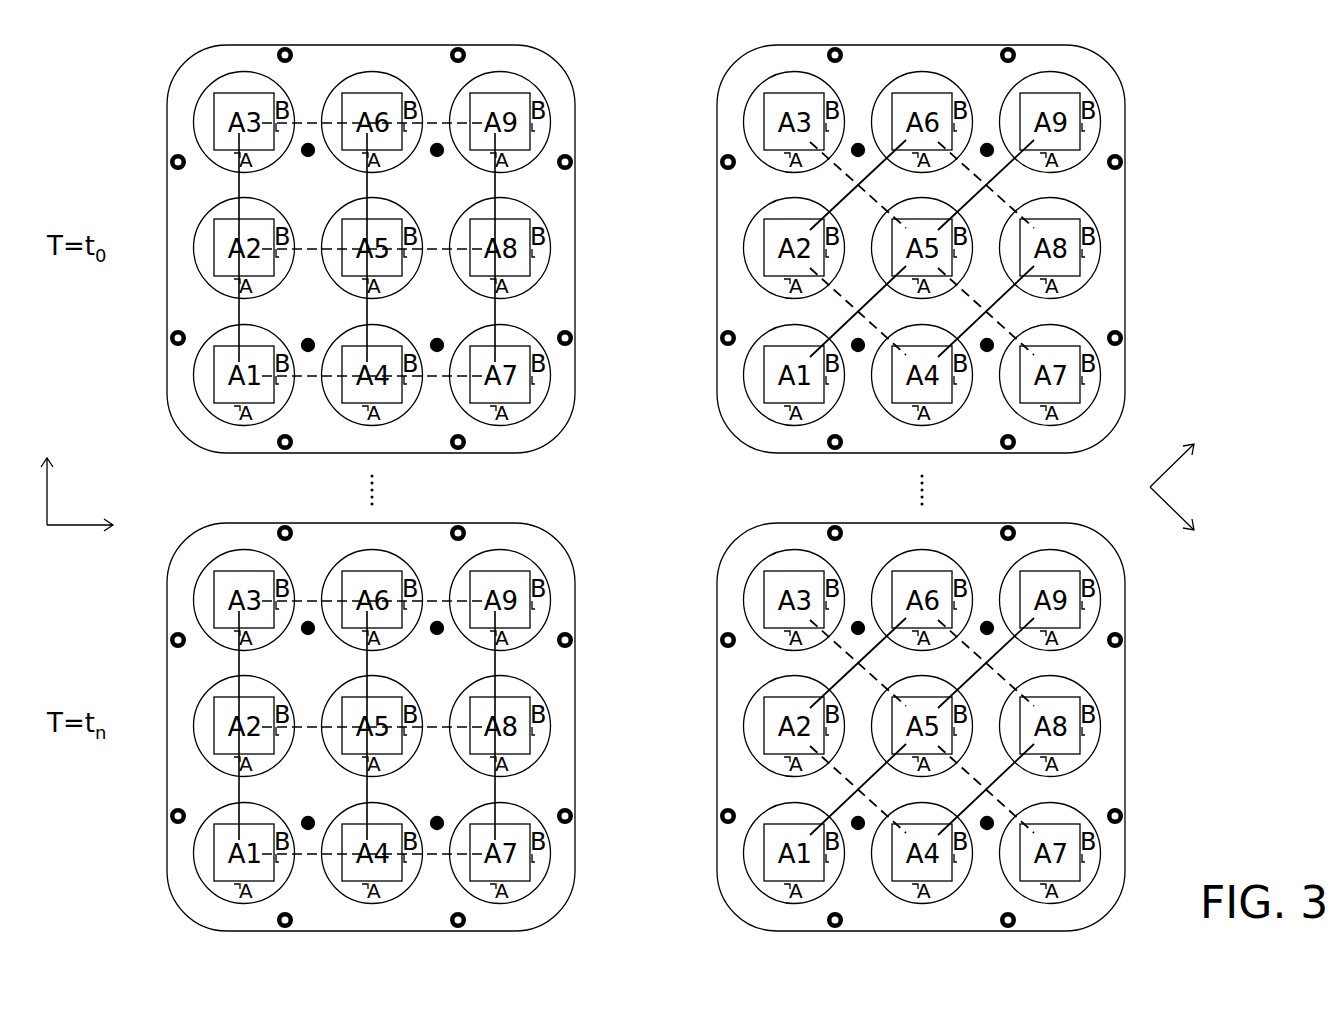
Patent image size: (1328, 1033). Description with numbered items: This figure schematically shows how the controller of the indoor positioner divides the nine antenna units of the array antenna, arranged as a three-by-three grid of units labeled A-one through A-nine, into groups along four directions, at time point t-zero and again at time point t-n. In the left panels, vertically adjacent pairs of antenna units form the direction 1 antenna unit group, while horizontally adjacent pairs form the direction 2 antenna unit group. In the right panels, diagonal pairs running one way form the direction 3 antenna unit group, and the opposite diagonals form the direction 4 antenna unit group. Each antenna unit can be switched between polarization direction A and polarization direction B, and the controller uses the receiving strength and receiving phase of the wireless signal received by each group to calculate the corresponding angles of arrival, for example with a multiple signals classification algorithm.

The direction ① antenna unit group 1 is at (47, 475).
The direction ② antenna unit group 2 is at (97, 525).
The direction ③ antenna unit group 3 is at (1187, 450).
The direction ④ antenna unit group 4 is at (1187, 524).